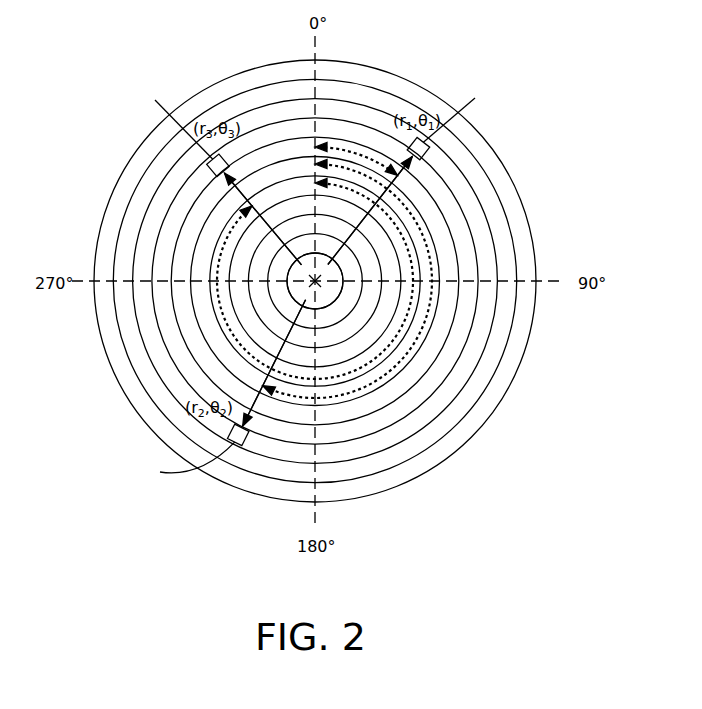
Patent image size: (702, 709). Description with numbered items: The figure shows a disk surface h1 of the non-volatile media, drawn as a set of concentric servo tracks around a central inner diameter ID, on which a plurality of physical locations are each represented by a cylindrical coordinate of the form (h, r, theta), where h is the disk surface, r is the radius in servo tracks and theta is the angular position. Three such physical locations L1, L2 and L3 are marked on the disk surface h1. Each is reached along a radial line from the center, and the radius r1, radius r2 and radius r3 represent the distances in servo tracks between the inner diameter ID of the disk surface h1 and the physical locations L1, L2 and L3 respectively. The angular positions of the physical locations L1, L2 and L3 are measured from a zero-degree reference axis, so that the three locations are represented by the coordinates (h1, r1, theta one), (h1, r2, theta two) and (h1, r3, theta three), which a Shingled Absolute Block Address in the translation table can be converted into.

The disk surface h1 is at (507, 142).
The inner diameter ID is at (338, 305).
The physical location L1 is at (406, 173).
The physical location L2 is at (223, 391).
The physical location L3 is at (224, 173).
The radius r1 is at (413, 160).
The radius r2 is at (257, 405).
The radius r3 is at (229, 174).